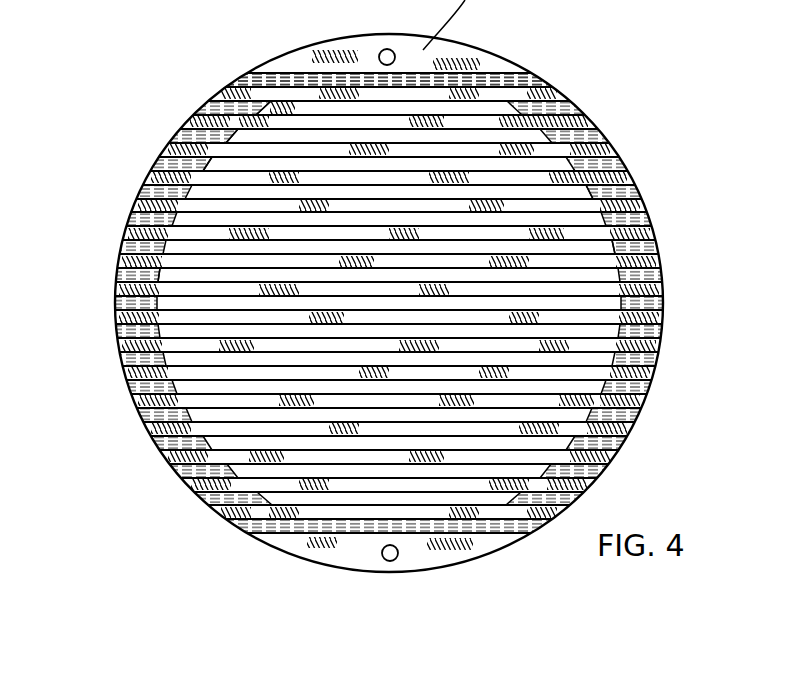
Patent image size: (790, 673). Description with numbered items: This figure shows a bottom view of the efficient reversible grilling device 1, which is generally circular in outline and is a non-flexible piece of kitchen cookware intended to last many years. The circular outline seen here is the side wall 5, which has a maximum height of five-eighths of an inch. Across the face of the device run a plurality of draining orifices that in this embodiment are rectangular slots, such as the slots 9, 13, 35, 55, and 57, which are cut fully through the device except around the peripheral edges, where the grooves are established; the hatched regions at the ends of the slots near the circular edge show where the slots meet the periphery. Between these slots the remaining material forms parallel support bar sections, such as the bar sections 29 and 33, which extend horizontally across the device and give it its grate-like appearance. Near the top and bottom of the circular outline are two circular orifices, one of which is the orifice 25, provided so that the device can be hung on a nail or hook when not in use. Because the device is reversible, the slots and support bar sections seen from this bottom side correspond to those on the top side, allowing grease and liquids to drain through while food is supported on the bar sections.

The efficient reversible grilling device 1 is at (623, 120).
The side wall 5 is at (624, 190).
The slot 9 is at (617, 238).
The slot 13 is at (167, 276).
The circular orifice 25 is at (389, 556).
The support bar section 29 is at (472, 93).
The support bar section 33 is at (497, 118).
The slot 35 is at (292, 108).
The slot 55 is at (258, 137).
The slot 57 is at (232, 163).